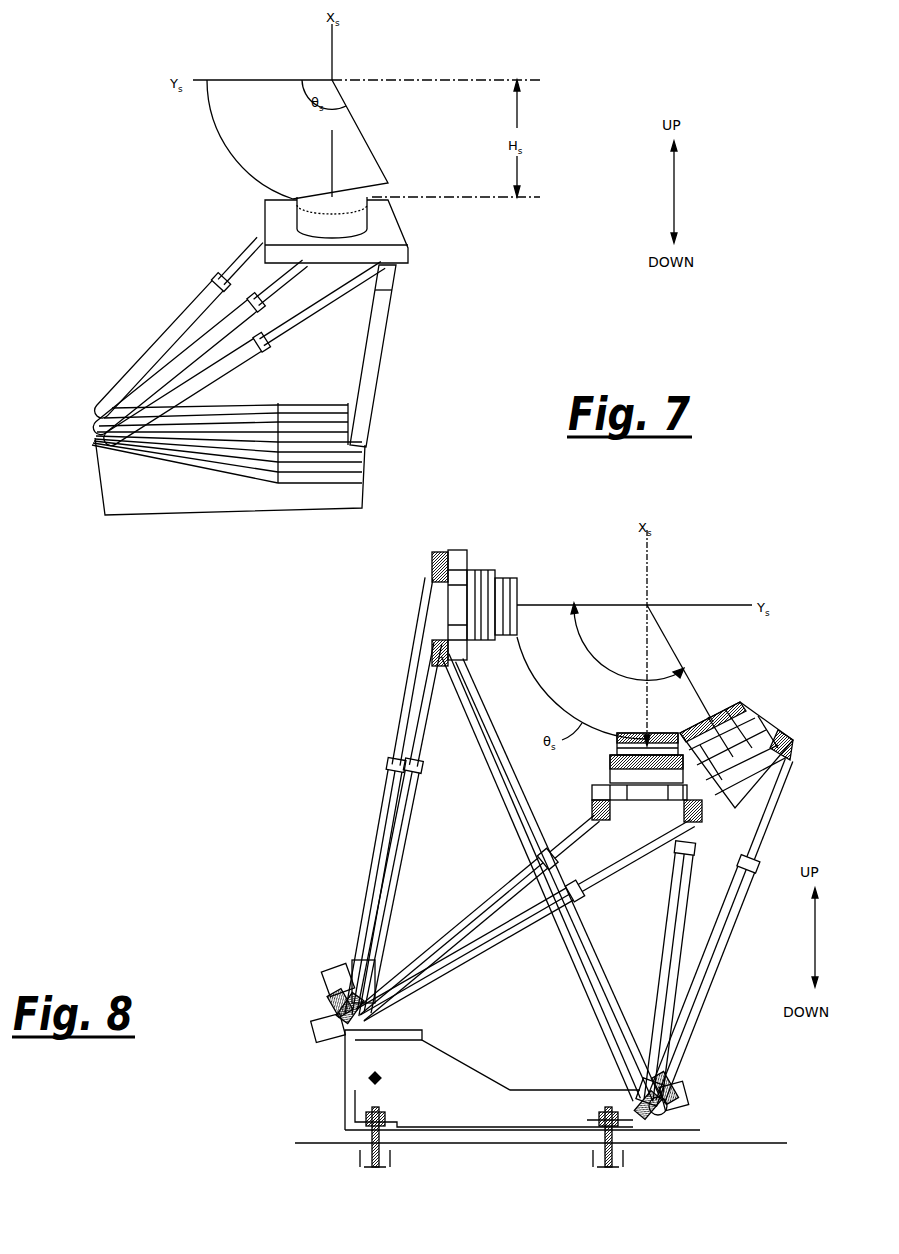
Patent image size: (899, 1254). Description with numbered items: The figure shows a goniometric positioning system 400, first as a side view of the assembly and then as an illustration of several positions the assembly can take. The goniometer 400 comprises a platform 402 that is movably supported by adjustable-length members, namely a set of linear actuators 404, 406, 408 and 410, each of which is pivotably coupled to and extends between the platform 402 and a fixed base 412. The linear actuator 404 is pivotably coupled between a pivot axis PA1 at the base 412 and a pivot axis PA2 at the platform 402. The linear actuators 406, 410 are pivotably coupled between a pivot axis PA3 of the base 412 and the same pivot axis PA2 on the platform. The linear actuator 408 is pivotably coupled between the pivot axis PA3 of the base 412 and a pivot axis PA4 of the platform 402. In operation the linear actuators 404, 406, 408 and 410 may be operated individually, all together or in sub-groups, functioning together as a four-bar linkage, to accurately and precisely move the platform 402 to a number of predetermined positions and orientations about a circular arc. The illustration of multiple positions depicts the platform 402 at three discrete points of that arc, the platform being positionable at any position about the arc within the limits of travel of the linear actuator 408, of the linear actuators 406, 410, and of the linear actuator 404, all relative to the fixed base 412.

In FIG. 7, the goniometric positioning system 400 is at (117, 197).
In FIG. 8, the goniometric positioning system 400 is at (361, 692).
In FIG. 7, the platform 402 is at (410, 248).
In FIG. 8, the platform 402 is at (484, 568).
In FIG. 7, the linear actuator 404 is at (380, 356).
In FIG. 8, the linear actuator 404 is at (567, 962).
In FIG. 7, the linear actuator 406 is at (113, 378).
In FIG. 8, the linear actuator 406 is at (410, 848).
In FIG. 7, the linear actuator 408 is at (203, 290).
In FIG. 8, the linear actuator 408 is at (388, 788).
In FIG. 7, the linear actuator 410 is at (247, 355).
In FIG. 8, the linear actuator 410 is at (406, 827).
In FIG. 7, the fixed base 412 is at (206, 518).
In FIG. 8, the fixed base 412 is at (345, 1112).
In FIG. 8, the pivot axis PA1 is at (625, 1098).
In FIG. 8, the pivot axis PA2 is at (438, 647).
In FIG. 8, the pivot axis PA3 is at (345, 1032).
In FIG. 8, the pivot axis PA4 is at (433, 560).